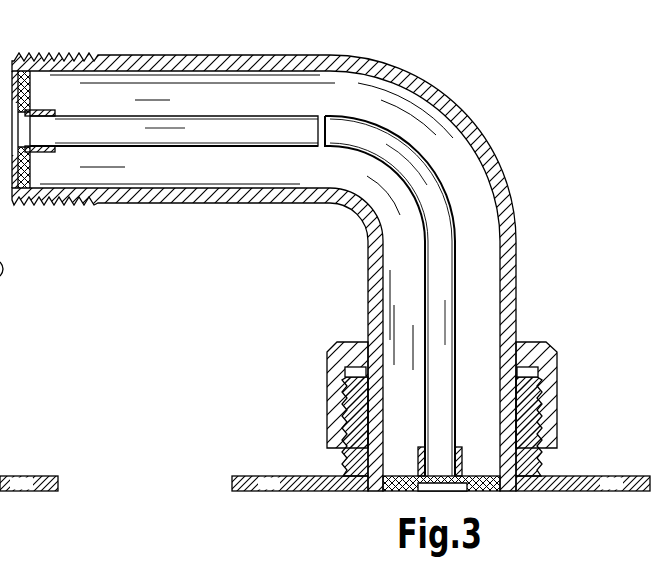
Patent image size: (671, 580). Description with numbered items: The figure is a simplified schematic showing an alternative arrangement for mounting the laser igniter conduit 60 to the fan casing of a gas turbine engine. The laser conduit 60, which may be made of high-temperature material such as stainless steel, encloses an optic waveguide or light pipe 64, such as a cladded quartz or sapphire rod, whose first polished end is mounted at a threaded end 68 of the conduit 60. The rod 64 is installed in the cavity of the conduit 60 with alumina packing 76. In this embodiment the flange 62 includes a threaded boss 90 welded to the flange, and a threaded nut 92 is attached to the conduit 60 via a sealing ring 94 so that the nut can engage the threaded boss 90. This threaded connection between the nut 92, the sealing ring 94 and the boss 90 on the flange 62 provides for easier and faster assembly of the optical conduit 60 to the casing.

The laser conduit 60 is at (498, 151).
The flange 62 is at (58, 476).
The optic waveguide or light pipe 64 is at (458, 206).
The threaded end 68 is at (53, 206).
The alumina packing 76 is at (255, 176).
The threaded boss 90 is at (541, 466).
The threaded nut 92 is at (557, 371).
The sealing ring 94 is at (348, 383).